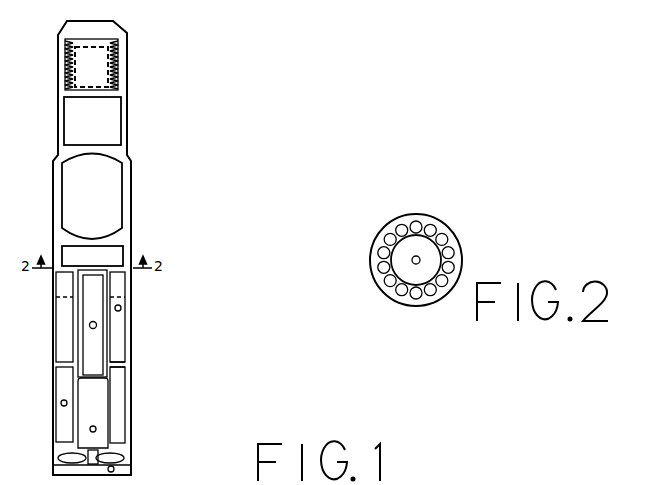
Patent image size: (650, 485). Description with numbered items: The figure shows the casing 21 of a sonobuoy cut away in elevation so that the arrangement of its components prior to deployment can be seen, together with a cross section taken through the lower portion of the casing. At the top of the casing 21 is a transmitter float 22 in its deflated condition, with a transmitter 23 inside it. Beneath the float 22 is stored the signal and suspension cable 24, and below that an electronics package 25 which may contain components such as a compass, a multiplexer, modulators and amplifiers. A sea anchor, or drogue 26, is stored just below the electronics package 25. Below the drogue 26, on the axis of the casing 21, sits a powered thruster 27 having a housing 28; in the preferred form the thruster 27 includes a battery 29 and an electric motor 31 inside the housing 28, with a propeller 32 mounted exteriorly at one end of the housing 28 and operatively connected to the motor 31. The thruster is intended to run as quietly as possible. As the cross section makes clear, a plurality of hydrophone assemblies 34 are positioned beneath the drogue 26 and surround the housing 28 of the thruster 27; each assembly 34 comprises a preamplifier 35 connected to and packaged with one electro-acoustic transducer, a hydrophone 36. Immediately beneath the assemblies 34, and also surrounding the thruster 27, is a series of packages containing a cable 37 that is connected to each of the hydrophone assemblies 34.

In FIG. 1, the casing 21 is at (125, 32).
In FIG. 1, the transmitter float 22 is at (113, 50).
In FIG. 1, the transmitter 23 is at (102, 80).
In FIG. 1, the signal and suspension cable 24 is at (107, 123).
In FIG. 1, the electronics package 25 is at (107, 197).
In FIG. 1, the sea anchor or drogue 26 is at (110, 257).
In FIG. 1, the powered thruster 27 is at (103, 377).
In FIG. 1, the housing 28 is at (108, 337).
In FIG. 2, the housing 28 is at (429, 260).
In FIG. 1, the battery 29 is at (97, 320).
In FIG. 1, the electric motor 31 is at (97, 398).
In FIG. 1, the propeller 32 is at (117, 457).
In FIG. 2, the hydrophone assemblies 34 is at (457, 193).
In FIG. 1, the preamplifier 35 is at (118, 356).
In FIG. 1, the hydrophone 36 is at (118, 290).
In FIG. 1, the cable 37 is at (118, 410).